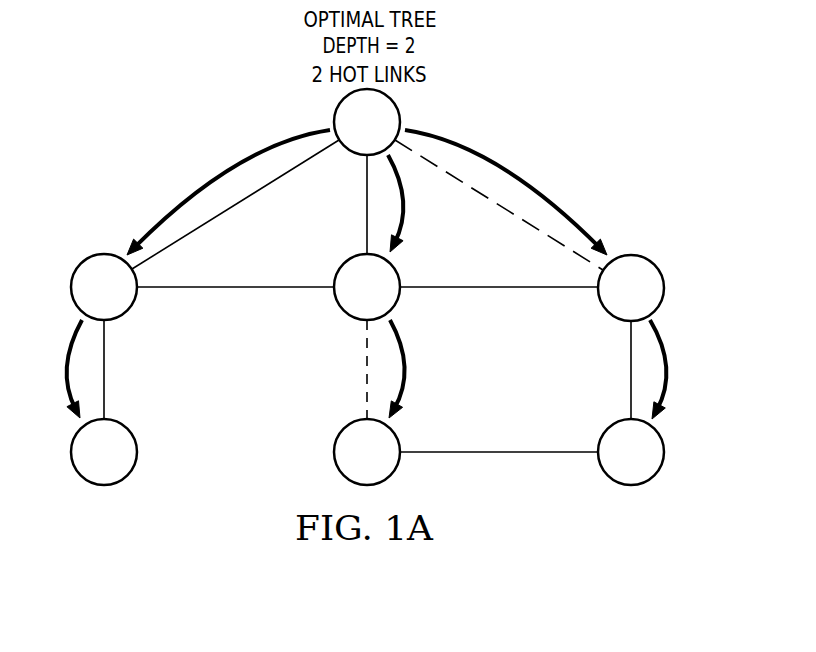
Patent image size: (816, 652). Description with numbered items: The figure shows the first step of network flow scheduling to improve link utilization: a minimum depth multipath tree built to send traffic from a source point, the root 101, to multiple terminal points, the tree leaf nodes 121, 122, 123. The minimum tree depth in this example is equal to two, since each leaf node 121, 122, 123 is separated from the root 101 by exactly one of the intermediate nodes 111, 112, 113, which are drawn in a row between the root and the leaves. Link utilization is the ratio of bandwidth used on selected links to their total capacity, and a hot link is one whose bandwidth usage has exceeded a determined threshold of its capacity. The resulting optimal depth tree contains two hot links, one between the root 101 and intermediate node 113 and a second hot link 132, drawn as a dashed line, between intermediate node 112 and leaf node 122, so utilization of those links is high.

The root 101 is at (400, 125).
The intermediate node 111 is at (85, 255).
The intermediate node 112 is at (352, 255).
The intermediate node 113 is at (648, 255).
The tree leaf node 121 is at (85, 483).
The tree leaf node 122 is at (350, 418).
The tree leaf node 123 is at (648, 482).
The second hot link 132 is at (365, 357).